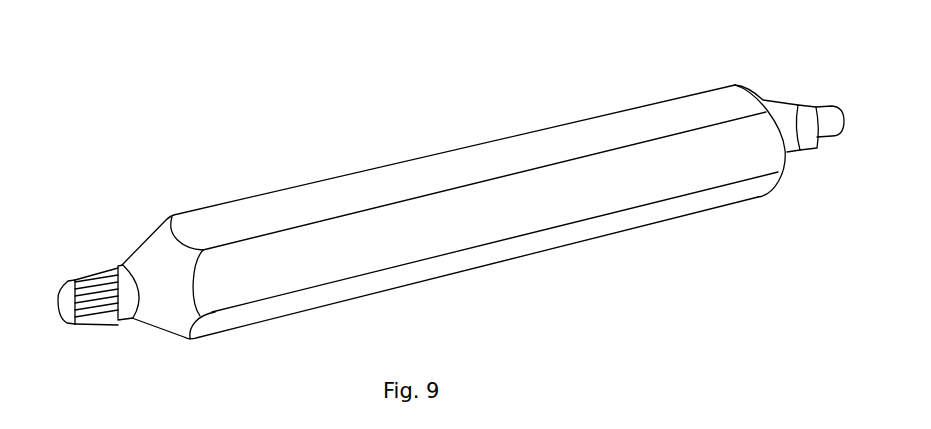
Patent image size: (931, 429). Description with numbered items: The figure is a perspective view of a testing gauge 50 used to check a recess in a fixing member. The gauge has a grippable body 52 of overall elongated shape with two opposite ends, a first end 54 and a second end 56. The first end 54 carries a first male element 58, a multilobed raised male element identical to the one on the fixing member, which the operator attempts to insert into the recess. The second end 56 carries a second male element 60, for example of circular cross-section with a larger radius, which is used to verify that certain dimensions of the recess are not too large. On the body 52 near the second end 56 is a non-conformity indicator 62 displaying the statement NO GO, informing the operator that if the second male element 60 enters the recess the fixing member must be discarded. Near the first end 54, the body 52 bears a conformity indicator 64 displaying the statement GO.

The testing gauge 50 is at (451, 211).
The grippable body 52 is at (461, 238).
The first end 54 is at (125, 318).
The second end 56 is at (803, 110).
The first male element 58 is at (68, 295).
The second male element 60 is at (831, 118).
The non-conformity indicator 62 is at (732, 179).
The conformity indicator 64 is at (235, 307).